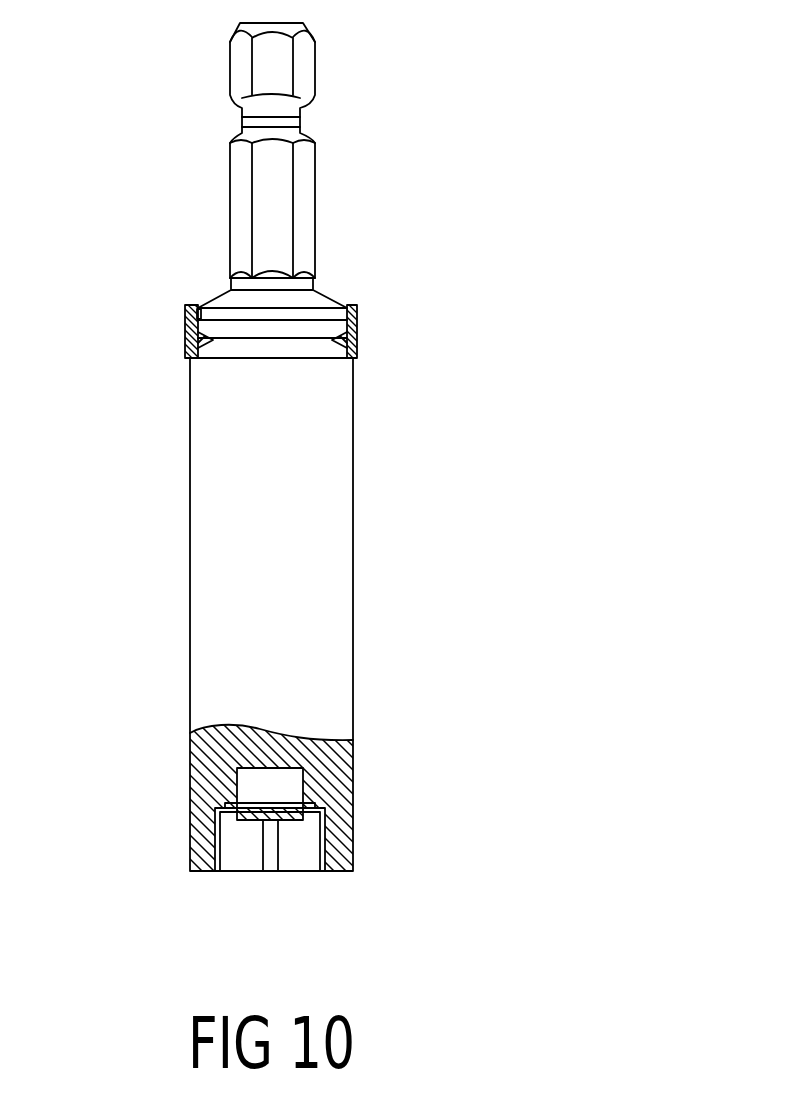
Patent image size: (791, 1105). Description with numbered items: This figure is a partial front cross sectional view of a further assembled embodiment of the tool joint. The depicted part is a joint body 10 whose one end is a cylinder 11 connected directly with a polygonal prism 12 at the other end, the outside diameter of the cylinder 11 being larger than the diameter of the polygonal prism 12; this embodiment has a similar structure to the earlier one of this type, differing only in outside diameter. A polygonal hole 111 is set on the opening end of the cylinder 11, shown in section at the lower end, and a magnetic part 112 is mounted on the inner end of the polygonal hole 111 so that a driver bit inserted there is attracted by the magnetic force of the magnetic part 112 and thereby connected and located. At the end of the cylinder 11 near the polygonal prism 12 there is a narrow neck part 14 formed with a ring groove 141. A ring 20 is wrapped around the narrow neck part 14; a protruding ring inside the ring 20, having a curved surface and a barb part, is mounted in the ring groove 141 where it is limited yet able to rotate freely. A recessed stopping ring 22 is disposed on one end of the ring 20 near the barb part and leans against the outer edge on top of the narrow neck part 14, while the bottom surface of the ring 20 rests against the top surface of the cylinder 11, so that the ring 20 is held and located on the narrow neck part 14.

The joint body 10 is at (211, 178).
The cylinder 11 is at (288, 538).
The polygonal hole 111 is at (245, 837).
The magnetic part 112 is at (285, 798).
The polygonal prism 12 is at (268, 72).
The narrow neck part 14 is at (350, 313).
The ring groove 141 is at (278, 336).
The ring 20 is at (348, 333).
The recessed stopping ring 22 is at (347, 308).